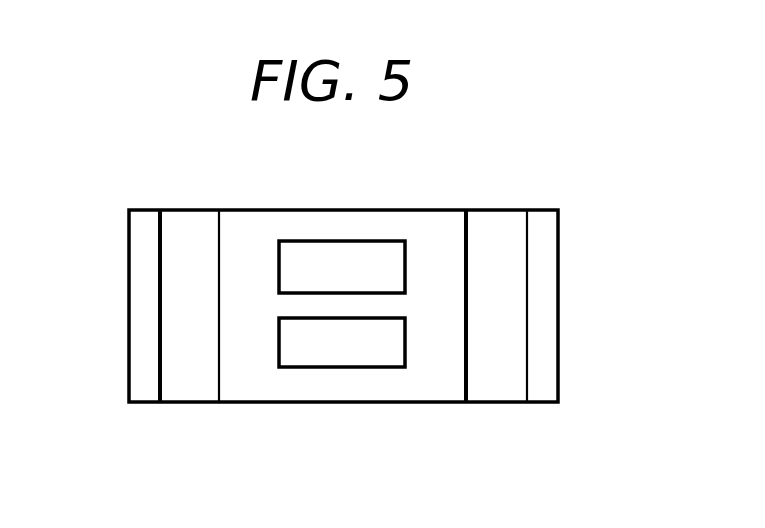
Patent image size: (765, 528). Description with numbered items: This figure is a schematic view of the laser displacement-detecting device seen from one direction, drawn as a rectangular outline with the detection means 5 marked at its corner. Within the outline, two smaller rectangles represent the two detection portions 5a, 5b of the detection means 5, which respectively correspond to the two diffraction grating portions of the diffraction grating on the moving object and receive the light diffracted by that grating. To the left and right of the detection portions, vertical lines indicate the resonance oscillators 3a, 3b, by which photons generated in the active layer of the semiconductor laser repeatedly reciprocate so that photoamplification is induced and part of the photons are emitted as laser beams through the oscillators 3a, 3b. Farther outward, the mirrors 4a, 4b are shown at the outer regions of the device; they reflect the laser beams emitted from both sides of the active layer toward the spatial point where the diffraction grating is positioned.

The detection means 5 is at (563, 199).
The detection portion 5a is at (385, 250).
The detection portion 5b is at (392, 350).
The resonance oscillator 3a is at (466, 362).
The resonance oscillator 3b is at (219, 357).
The mirror 4a is at (518, 328).
The mirror 4b is at (170, 292).